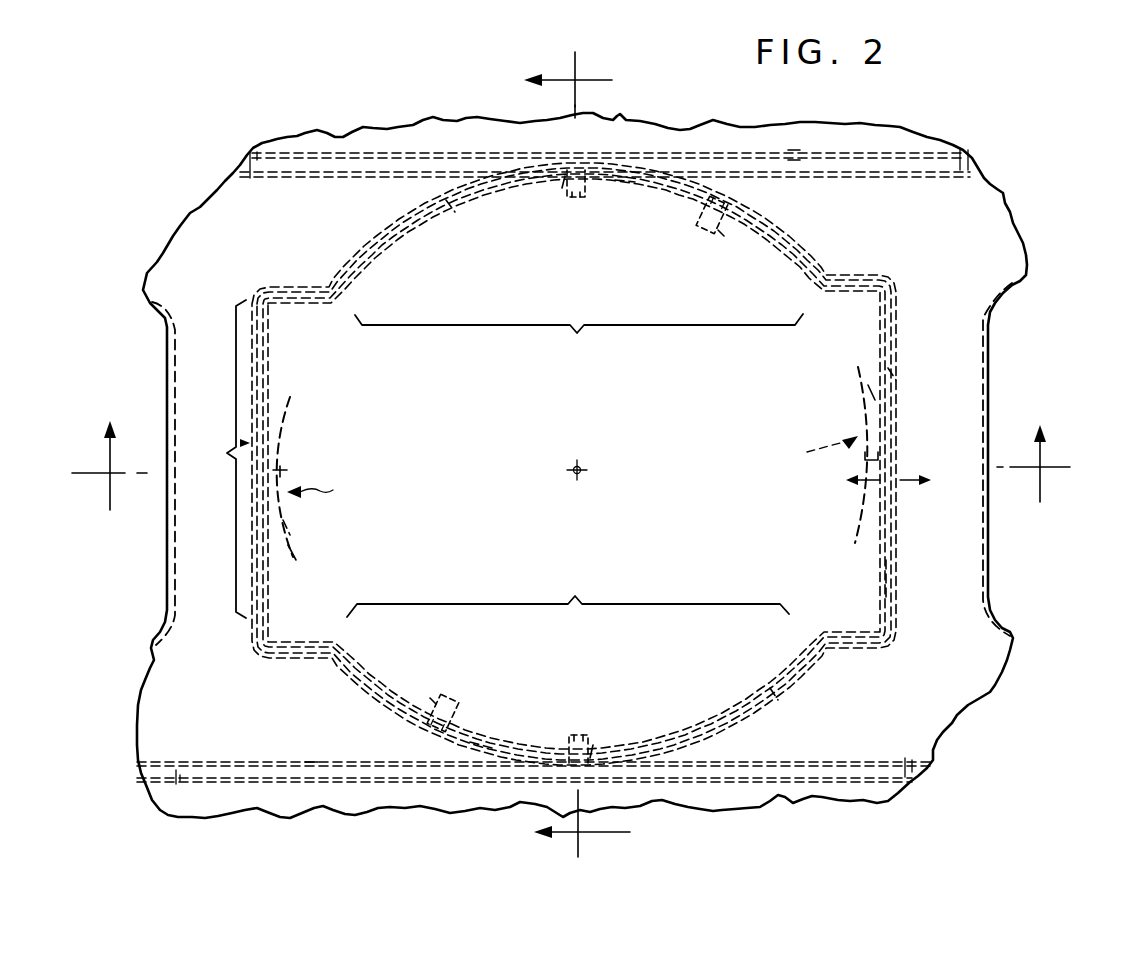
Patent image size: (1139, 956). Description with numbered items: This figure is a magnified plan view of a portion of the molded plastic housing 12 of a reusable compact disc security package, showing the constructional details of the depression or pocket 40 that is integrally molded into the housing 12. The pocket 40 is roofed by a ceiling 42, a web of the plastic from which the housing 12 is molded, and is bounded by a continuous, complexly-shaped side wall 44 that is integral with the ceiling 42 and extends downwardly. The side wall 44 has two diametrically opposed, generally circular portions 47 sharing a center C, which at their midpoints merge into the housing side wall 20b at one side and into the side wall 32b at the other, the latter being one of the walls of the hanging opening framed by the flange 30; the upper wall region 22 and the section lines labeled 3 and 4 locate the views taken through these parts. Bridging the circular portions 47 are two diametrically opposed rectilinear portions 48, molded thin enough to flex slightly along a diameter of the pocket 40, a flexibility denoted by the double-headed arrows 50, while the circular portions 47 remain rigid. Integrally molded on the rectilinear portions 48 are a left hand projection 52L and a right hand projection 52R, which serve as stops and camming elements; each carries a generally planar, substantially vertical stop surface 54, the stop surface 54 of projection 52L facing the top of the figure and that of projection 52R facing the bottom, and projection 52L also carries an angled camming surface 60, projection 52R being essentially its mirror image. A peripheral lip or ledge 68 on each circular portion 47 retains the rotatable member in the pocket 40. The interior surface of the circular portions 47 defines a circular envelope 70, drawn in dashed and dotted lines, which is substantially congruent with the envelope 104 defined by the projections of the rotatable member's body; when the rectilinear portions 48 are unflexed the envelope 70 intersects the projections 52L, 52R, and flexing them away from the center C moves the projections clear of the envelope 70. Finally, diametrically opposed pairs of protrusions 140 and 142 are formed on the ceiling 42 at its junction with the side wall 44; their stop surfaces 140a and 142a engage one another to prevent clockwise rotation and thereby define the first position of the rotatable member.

The housing 12 is at (1012, 186).
The side wall 20b is at (793, 158).
The top wall 22 is at (680, 134).
The flange 30 is at (323, 799).
The side wall 32b is at (311, 760).
The depression or pocket 40 is at (820, 363).
The ceiling or roof 42 is at (840, 573).
The side wall 44 is at (372, 247).
The circular portions 47 is at (575, 465).
The rectilinear portions 48 is at (221, 459).
The double-headed arrows 50 is at (271, 435).
The left hand projection 52L is at (330, 493).
The right hand projection 52R is at (805, 450).
The stop surface 54 is at (287, 467).
The camming surface 60 is at (287, 528).
The peripheral lip or ledge 68 is at (624, 183).
The circular envelope 70 is at (450, 203).
The circular envelope 104 is at (581, 483).
The protrusions 140 is at (577, 205).
The stop surfaces 140a is at (562, 190).
The protrusions 142 is at (711, 222).
The stop surfaces 142a is at (721, 229).
The center C is at (583, 467).
The section line 3- 3 is at (571, 451).
The section line 4- 4 is at (568, 454).